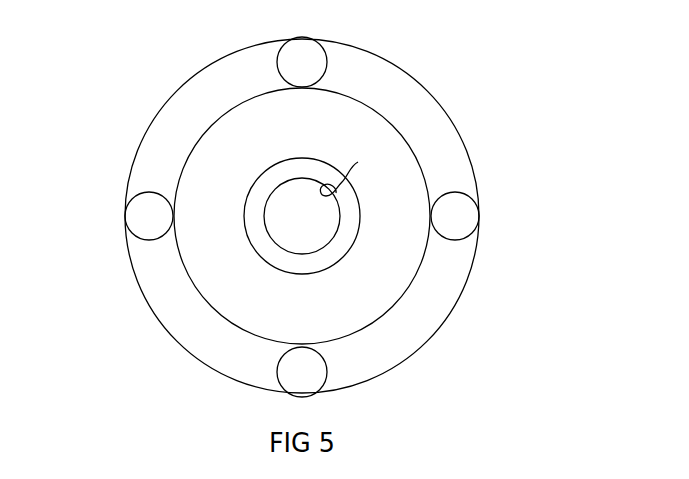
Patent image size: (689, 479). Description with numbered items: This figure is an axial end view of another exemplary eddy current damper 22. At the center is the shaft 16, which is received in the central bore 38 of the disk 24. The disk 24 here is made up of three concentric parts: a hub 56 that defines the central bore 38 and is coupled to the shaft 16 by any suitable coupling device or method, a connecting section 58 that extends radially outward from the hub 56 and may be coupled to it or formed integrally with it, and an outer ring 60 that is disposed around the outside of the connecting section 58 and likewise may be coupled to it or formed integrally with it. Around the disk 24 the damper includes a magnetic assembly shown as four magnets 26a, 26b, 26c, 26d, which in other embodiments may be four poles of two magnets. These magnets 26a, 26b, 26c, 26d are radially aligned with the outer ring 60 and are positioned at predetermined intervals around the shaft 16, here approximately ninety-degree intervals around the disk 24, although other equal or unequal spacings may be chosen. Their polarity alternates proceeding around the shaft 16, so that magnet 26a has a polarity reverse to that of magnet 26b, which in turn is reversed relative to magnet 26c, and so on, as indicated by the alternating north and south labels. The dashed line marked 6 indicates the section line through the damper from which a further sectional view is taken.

The section line 6- 6 is at (301, 210).
The shaft 16 is at (316, 245).
The eddy current damper 22 is at (478, 74).
The disk 24 is at (470, 284).
The magnet 26a is at (478, 200).
The magnet 26b is at (320, 380).
The magnet 26c is at (126, 206).
The magnet 26d is at (322, 40).
The central bore 38 is at (353, 171).
The hub 56 is at (348, 237).
The connecting section 58 is at (412, 205).
The outer ring 60 is at (447, 145).